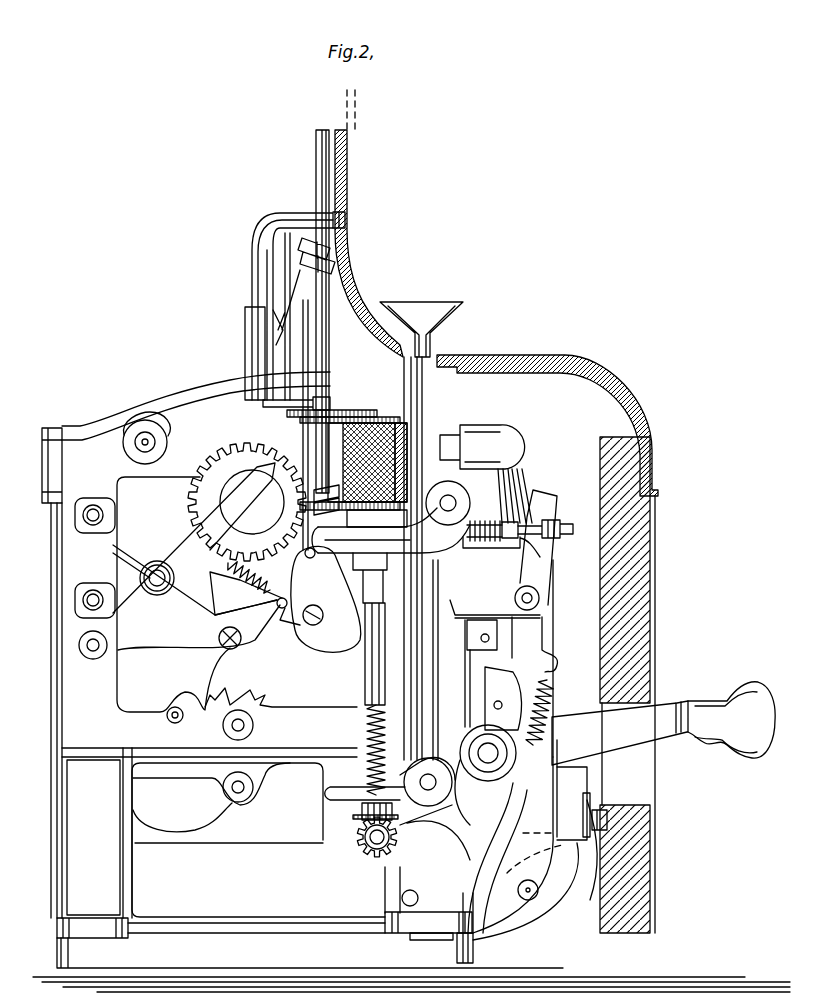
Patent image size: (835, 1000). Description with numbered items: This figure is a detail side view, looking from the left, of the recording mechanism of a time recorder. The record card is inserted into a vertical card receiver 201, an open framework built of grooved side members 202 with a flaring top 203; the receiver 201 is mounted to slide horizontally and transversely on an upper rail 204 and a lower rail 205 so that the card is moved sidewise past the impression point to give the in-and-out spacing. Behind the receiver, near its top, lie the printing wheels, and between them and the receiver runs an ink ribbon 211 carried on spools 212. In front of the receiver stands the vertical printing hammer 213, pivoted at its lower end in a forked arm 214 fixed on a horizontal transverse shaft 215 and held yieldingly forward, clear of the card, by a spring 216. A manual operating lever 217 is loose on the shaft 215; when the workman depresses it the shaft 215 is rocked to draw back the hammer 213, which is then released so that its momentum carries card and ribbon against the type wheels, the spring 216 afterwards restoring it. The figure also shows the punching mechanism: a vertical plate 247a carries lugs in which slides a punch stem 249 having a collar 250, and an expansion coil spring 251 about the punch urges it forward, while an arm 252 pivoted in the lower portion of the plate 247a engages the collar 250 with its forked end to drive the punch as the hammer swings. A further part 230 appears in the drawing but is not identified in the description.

The card receiver 201 is at (437, 358).
The grooved side members 202 is at (422, 387).
The flaring top 203 is at (427, 302).
The upper rail 204 is at (452, 500).
The lower rail 205 is at (428, 792).
The ink ribbon 211 is at (347, 450).
The spools 212 is at (390, 413).
The printing hammer 213 is at (486, 474).
The forked arm 214 is at (490, 678).
The horizontal transverse shaft 215 is at (492, 762).
The spring 216 is at (550, 687).
The manual operating lever 217 is at (663, 723).
The arm 230 is at (450, 547).
The vertical plate 247a is at (495, 654).
The punch stem 249 is at (553, 526).
The collar 250 is at (512, 522).
The expansion coil spring 251 is at (478, 526).
The arm 252 is at (530, 573).